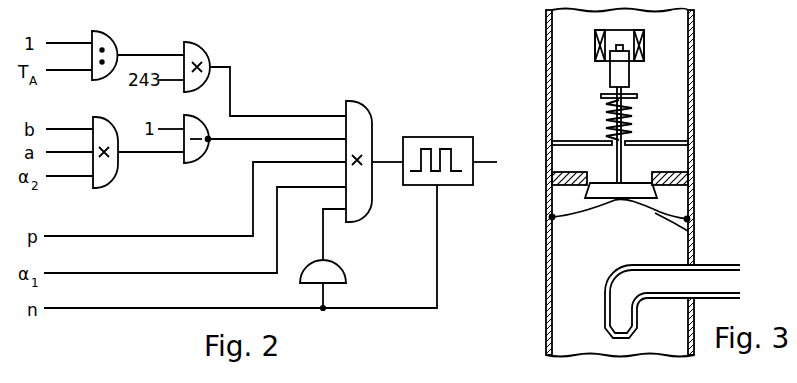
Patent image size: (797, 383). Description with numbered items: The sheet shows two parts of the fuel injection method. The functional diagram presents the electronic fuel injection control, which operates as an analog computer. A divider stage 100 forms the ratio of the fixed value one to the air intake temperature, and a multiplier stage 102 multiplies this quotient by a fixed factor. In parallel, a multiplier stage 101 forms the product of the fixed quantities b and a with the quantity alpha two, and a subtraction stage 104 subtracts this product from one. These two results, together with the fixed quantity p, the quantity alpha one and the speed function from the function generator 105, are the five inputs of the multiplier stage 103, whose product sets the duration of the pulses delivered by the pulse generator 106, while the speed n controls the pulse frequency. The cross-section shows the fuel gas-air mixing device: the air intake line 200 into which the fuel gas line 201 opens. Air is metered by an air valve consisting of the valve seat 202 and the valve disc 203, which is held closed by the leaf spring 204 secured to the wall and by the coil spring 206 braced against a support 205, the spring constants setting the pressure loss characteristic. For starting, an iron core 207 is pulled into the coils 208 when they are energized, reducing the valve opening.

In FIG. 2, the divider stage 100 is at (108, 42).
In FIG. 2, the multiplier stage 101 is at (113, 178).
In FIG. 2, the multiplier stage 102 is at (208, 59).
In FIG. 2, the multiplier stage 103 is at (352, 104).
In FIG. 2, the subtraction stage 104 is at (198, 163).
In FIG. 2, the function generator 105 is at (346, 276).
In FIG. 2, the pulse generator 106 is at (426, 137).
In FIG. 3, the air intake line 200 is at (547, 65).
In FIG. 3, the fuel gas line 201 is at (709, 265).
In FIG. 3, the valve seat 202 is at (683, 172).
In FIG. 3, the valve disc 203 is at (657, 194).
In FIG. 3, the leaf spring 204 is at (690, 229).
In FIG. 3, the support 205 is at (673, 141).
In FIG. 3, the coil spring 206 is at (628, 111).
In FIG. 3, the iron core 207 is at (623, 72).
In FIG. 3, the coils 208 is at (644, 43).